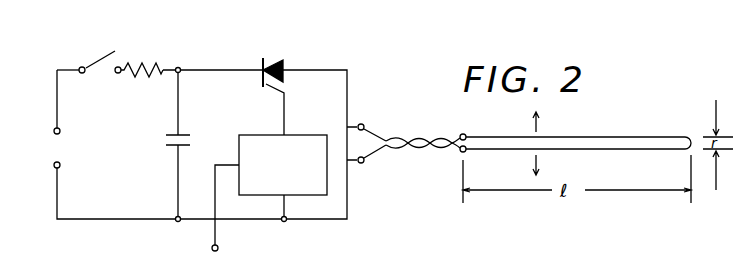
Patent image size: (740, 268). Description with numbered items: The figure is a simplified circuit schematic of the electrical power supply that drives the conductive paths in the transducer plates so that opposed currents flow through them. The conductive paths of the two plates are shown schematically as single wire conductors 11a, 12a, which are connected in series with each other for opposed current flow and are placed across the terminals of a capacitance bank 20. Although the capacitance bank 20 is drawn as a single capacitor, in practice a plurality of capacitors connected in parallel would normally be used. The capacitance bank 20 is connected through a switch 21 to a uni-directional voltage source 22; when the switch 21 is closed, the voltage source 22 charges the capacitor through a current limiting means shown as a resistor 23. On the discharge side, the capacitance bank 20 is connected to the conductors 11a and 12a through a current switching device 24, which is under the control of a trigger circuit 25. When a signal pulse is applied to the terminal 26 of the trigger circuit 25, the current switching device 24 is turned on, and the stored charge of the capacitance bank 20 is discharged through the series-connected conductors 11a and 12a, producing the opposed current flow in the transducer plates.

The single wire conductor 11a is at (597, 136).
The single wire conductor 12a is at (597, 150).
The capacitance bank 20 is at (170, 131).
The switch 21 is at (98, 57).
The uni-directional voltage source 22 is at (43, 148).
The resistor 23 is at (147, 60).
The current switching device 24 is at (285, 62).
The trigger circuit 25 is at (240, 133).
The terminal 26 is at (225, 249).